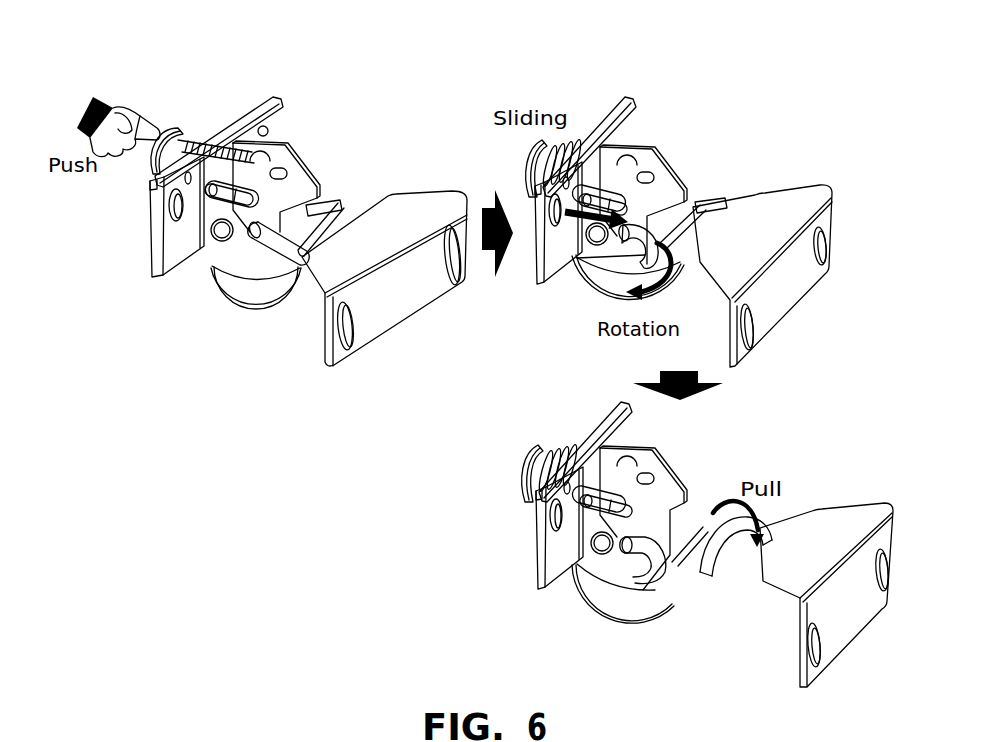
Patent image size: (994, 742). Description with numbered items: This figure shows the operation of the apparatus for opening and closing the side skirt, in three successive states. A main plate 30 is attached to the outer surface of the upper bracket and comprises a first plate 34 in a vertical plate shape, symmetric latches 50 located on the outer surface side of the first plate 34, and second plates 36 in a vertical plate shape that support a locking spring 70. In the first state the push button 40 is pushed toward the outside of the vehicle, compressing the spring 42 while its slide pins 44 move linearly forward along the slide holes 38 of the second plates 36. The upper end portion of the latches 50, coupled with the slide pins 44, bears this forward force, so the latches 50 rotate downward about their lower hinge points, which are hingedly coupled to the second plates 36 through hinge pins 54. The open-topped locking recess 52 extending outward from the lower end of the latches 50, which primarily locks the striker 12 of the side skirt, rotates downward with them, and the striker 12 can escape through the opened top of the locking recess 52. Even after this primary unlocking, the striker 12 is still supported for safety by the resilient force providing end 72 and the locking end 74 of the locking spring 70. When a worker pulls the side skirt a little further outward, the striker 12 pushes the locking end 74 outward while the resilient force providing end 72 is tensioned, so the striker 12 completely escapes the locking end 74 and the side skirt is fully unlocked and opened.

The striker 12 is at (332, 208).
The main plate 30 is at (332, 343).
The first plate 34 is at (220, 170).
The second plates 36 is at (177, 187).
The slide holes 38 is at (282, 172).
The push button 40 is at (170, 135).
The spring 42 is at (193, 143).
The slide pins 44 is at (208, 200).
The latches 50 is at (270, 290).
The locking recess 52 is at (250, 228).
The hinge pins 54 is at (220, 236).
The locking spring 70 is at (289, 312).
The resilient force providing end 72 is at (262, 275).
The locking end 74 is at (313, 206).